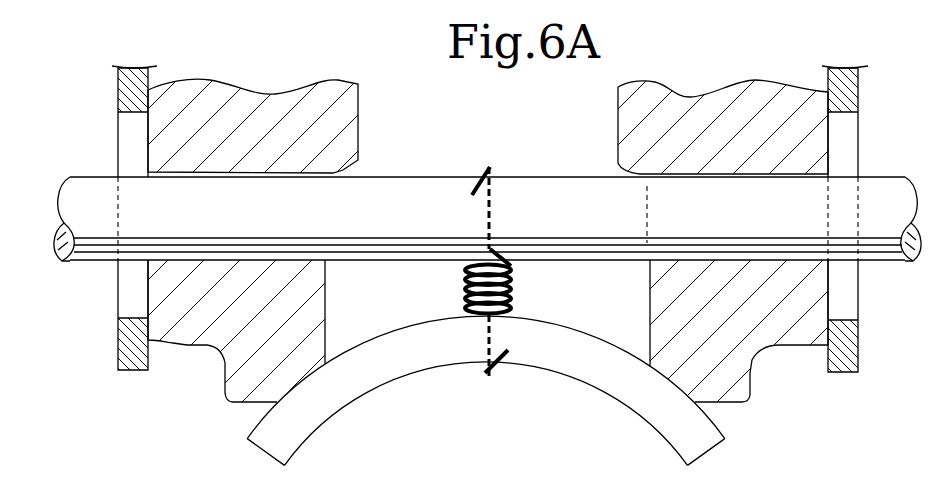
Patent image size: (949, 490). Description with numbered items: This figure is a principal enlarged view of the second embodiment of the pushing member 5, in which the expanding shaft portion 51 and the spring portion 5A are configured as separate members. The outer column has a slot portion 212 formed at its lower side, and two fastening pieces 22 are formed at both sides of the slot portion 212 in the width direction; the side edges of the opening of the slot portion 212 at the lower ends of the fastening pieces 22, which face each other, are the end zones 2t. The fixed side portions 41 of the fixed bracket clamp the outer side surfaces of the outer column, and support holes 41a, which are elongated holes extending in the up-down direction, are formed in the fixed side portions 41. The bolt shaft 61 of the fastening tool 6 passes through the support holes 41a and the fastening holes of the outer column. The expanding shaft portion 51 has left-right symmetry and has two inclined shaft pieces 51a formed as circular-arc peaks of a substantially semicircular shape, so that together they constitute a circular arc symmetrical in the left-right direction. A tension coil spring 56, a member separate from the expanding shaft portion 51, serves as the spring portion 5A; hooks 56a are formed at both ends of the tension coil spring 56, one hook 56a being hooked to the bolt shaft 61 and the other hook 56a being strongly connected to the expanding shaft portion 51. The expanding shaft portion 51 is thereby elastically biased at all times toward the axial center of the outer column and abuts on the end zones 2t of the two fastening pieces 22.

The fastening tool 6 is at (391, 176).
The bolt shaft 61 is at (551, 200).
The fixed side portions 41 is at (118, 90).
The support holes 41a is at (130, 317).
The fastening pieces 22 is at (187, 345).
The pushing member 5 is at (486, 379).
The expanding shaft portion 51 is at (440, 348).
The inclined shaft pieces 51a is at (380, 372).
The end zones 2t is at (305, 380).
The slot portion 212 is at (561, 299).
The spring portion 5A is at (503, 271).
The tension coil spring 56 is at (466, 286).
The hooks 56a is at (473, 192).